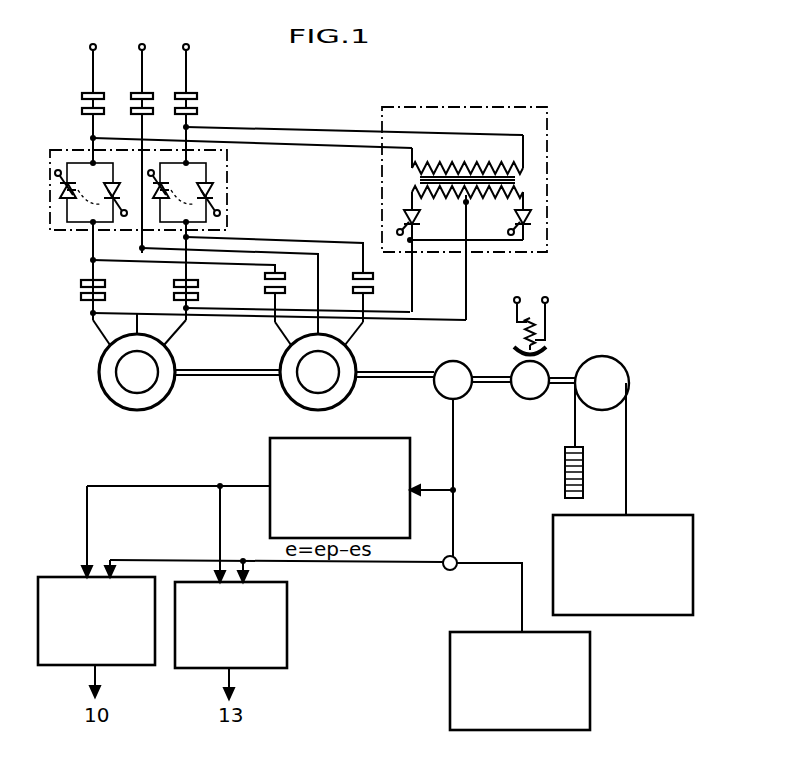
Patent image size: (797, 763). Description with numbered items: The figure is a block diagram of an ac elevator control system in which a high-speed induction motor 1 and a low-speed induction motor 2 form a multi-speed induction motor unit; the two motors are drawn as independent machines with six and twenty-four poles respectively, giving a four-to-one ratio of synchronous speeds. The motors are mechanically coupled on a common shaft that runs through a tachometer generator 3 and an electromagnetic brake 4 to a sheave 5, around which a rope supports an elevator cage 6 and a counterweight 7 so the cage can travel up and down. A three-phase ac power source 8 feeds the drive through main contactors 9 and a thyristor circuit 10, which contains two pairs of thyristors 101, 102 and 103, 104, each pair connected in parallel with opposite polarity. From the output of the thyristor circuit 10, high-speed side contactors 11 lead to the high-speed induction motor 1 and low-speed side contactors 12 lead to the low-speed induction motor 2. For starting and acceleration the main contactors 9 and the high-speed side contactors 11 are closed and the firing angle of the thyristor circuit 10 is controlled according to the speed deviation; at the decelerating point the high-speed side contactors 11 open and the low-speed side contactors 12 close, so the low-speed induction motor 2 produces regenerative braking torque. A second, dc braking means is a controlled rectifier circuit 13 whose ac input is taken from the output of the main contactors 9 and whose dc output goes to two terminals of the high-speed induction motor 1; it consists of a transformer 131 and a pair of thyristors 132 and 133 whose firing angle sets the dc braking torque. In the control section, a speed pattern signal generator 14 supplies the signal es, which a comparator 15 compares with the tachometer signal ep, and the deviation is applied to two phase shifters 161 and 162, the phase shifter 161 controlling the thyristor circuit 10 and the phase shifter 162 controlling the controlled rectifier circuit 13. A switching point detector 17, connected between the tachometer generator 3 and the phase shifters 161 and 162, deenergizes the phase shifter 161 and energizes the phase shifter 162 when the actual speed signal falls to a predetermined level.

The high-speed induction motor 1 is at (160, 400).
The low-speed induction motor 2 is at (350, 398).
The tachometer generator 3 is at (440, 396).
The electromagnetic brake 4 is at (514, 364).
The sheave 5 is at (629, 381).
The elevator cage 6 is at (648, 515).
The counterweight 7 is at (565, 477).
The three-phase ac power source 8 is at (187, 38).
The main contactors 9 is at (149, 99).
The thyristor circuit 10 is at (153, 190).
The thyristor 101 is at (84, 191).
The thyristor 102 is at (101, 204).
The thyristor 103 is at (177, 191).
The thyristor 104 is at (194, 204).
The high-speed side contactors 11 is at (103, 280).
The low-speed side contactors 12 is at (285, 276).
The controlled rectifier circuit 13 is at (481, 213).
The transformer 131 is at (513, 183).
The thyristor 132 is at (427, 222).
The thyristor 133 is at (511, 223).
The speed pattern signal generator 14 is at (590, 695).
The comparator 15 is at (449, 571).
The phase shifter 161 is at (115, 667).
The phase shifter 162 is at (287, 625).
The switching point detector 17 is at (270, 462).